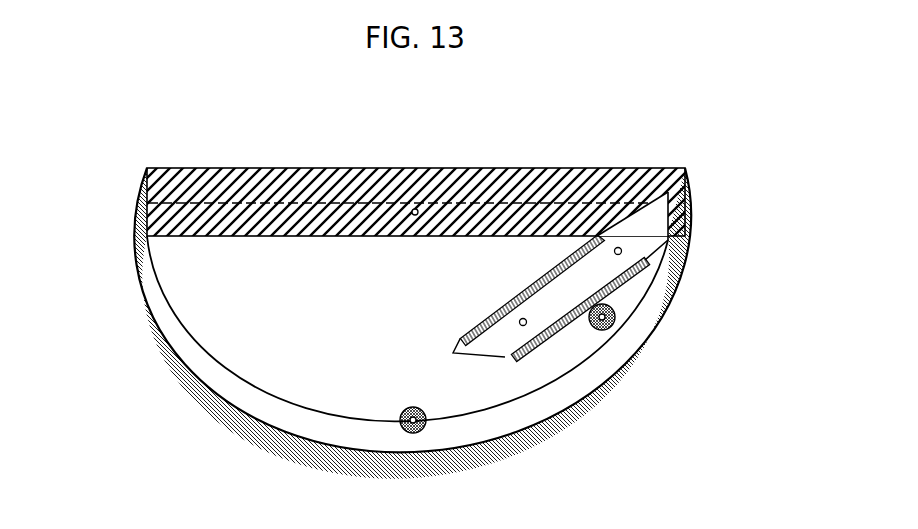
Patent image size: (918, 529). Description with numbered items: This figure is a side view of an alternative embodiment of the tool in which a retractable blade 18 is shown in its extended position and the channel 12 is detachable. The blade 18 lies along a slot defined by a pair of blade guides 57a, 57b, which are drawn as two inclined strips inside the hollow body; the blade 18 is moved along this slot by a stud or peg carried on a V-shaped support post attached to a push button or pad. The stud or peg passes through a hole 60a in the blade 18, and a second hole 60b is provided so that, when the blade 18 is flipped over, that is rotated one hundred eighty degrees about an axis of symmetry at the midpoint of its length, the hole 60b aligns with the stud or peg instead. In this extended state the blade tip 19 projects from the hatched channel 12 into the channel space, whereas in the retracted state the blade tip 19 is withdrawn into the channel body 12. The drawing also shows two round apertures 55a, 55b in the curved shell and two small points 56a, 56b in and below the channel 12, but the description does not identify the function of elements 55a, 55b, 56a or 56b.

The channel 12 is at (242, 213).
The retractable blade 18 is at (642, 232).
The blade tip 19 is at (635, 196).
The aperture 55a is at (612, 326).
The aperture 55b is at (405, 432).
The sensor 56a is at (415, 209).
The sensor strip 56b is at (600, 214).
The blade guide 57a is at (482, 327).
The blade guide 57b is at (568, 325).
The hole 60a is at (525, 325).
The hole 60b is at (621, 253).